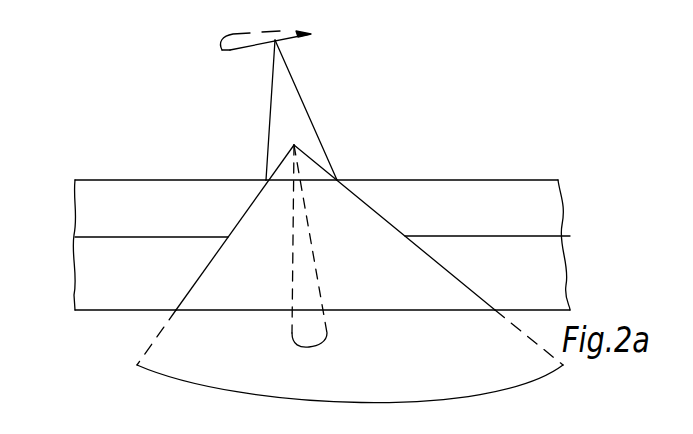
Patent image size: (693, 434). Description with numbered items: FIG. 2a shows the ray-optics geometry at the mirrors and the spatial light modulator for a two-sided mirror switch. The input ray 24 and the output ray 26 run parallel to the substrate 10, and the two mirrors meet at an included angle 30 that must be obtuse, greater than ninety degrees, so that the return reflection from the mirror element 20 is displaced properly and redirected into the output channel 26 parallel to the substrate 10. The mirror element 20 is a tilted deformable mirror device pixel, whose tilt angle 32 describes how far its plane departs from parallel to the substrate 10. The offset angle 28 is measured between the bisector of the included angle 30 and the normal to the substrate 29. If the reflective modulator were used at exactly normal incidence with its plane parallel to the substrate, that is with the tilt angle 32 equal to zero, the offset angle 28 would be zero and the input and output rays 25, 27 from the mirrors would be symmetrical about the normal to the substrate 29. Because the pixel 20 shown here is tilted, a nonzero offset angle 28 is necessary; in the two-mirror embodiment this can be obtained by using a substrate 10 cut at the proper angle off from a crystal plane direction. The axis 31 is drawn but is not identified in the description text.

The substrate 10 is at (531, 282).
The light source 20 is at (311, 38).
The first layer surface 24 is at (188, 180).
The left edge ray of incident beam 25 is at (271, 100).
The second layer surface 26 is at (470, 180).
The right edge ray of incident beam 27 is at (301, 98).
The focal region 28 is at (312, 348).
The normal axis 29 is at (293, 296).
The scattered light cone 30 is at (400, 403).
The tilted beam axis 31 is at (316, 268).
The aperture 32 is at (223, 48).